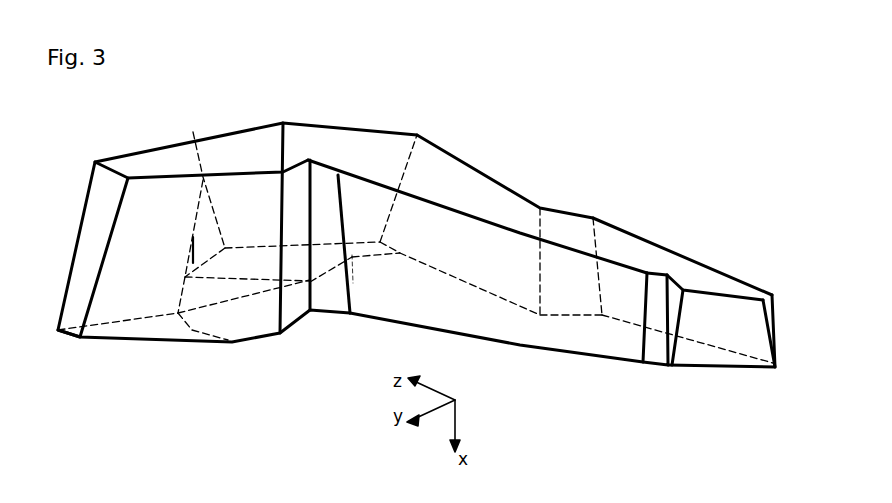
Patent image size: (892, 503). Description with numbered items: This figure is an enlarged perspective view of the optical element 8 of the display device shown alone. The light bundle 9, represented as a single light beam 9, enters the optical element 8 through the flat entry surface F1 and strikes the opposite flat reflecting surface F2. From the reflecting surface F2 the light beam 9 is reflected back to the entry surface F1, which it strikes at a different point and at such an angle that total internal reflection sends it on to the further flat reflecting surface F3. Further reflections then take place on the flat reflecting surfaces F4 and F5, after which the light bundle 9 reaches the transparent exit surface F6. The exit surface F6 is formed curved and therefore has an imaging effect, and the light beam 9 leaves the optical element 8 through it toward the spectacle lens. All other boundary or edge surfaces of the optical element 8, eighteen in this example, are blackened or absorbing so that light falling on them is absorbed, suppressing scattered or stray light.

The entry surface F1 is at (662, 240).
The reflecting surface F2 is at (717, 357).
The further flat reflecting surface F3 is at (607, 337).
The flat reflecting surface F4 is at (350, 128).
The flat reflecting surface F5 is at (233, 318).
The exit surface F6 is at (63, 200).
The optical element 8 is at (488, 193).
The light bundle 9 is at (562, 292).